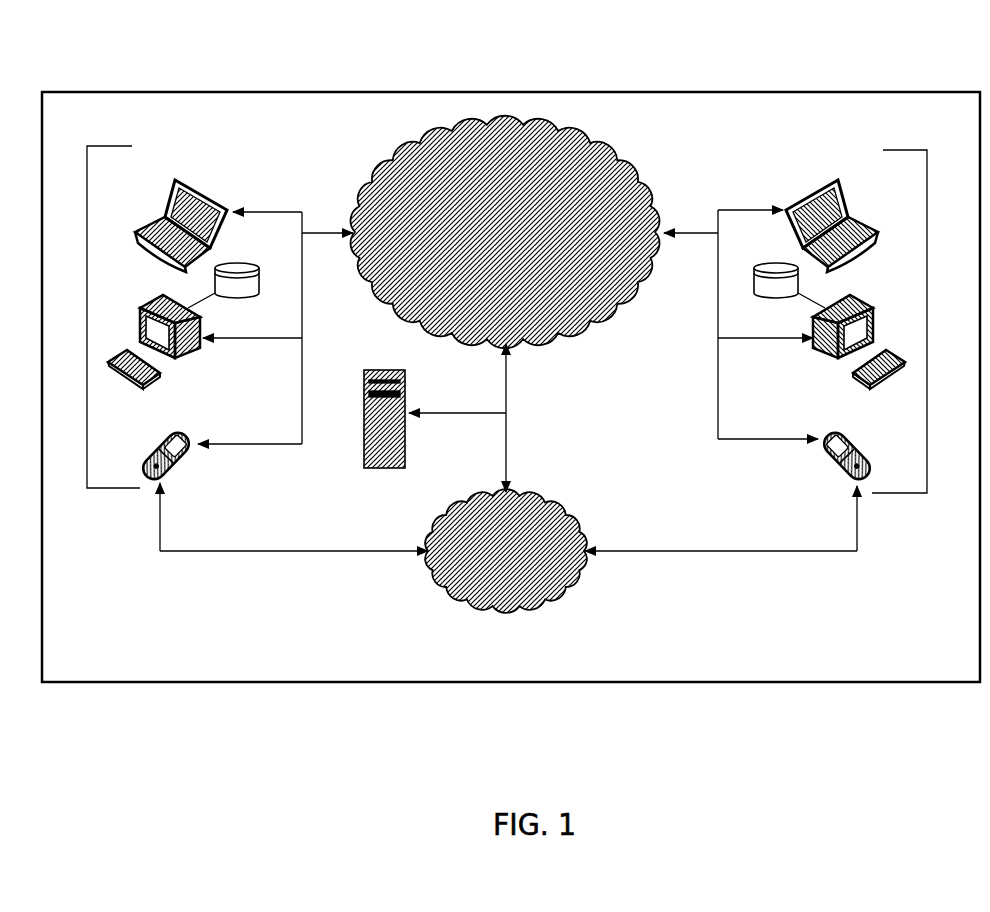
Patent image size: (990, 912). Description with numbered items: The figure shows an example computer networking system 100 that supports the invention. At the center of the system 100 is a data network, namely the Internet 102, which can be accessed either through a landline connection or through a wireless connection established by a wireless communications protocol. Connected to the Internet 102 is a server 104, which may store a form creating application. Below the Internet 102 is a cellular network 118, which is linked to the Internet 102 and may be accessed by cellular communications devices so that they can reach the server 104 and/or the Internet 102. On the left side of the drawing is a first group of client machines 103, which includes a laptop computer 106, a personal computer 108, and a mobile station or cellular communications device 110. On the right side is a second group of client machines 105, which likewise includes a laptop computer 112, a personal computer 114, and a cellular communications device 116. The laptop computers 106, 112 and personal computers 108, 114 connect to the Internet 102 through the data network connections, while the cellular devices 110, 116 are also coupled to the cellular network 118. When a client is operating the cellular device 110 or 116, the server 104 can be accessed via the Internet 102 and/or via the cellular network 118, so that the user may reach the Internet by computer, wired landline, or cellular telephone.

The system 100 is at (140, 90).
The Internet 102 is at (365, 183).
The client machines 103 is at (100, 490).
The server 104 is at (407, 390).
The client machines 105 is at (898, 495).
The laptop computer 106 is at (165, 210).
The personal computer 108 is at (133, 330).
The cellular communications device 110 is at (157, 447).
The laptop computer 112 is at (855, 208).
The personal computer 114 is at (870, 307).
The cellular communications device 116 is at (855, 455).
The cellular network 118 is at (548, 495).